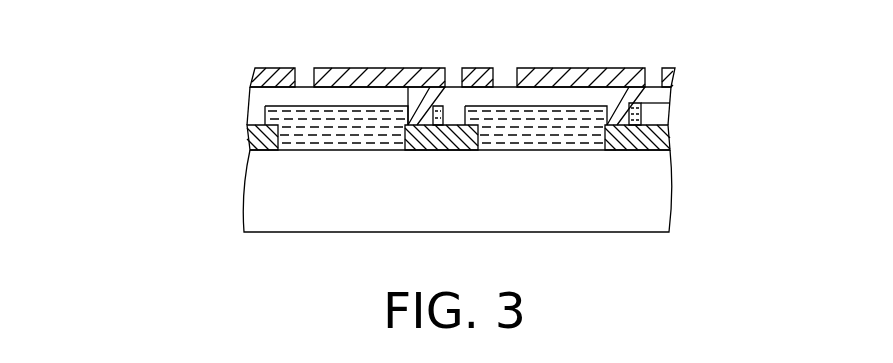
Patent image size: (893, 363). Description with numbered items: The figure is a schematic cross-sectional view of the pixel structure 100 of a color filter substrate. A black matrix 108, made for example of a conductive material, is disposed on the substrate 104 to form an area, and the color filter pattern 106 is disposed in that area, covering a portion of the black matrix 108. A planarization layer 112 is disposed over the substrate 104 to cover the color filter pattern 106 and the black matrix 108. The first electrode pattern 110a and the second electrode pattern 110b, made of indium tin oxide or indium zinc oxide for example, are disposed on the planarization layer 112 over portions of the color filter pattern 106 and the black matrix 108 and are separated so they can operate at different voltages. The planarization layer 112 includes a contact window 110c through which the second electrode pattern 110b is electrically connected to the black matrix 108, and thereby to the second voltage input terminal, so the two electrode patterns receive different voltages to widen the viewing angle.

The pixel structure 100 is at (803, 189).
The substrate 104 is at (650, 218).
The color filter pattern 106 is at (662, 110).
The black matrix 108 is at (669, 136).
The first electrode pattern 110a is at (285, 78).
The second electrode pattern 110b is at (368, 78).
The contact window 110c is at (668, 89).
The planarization layer 112 is at (245, 100).